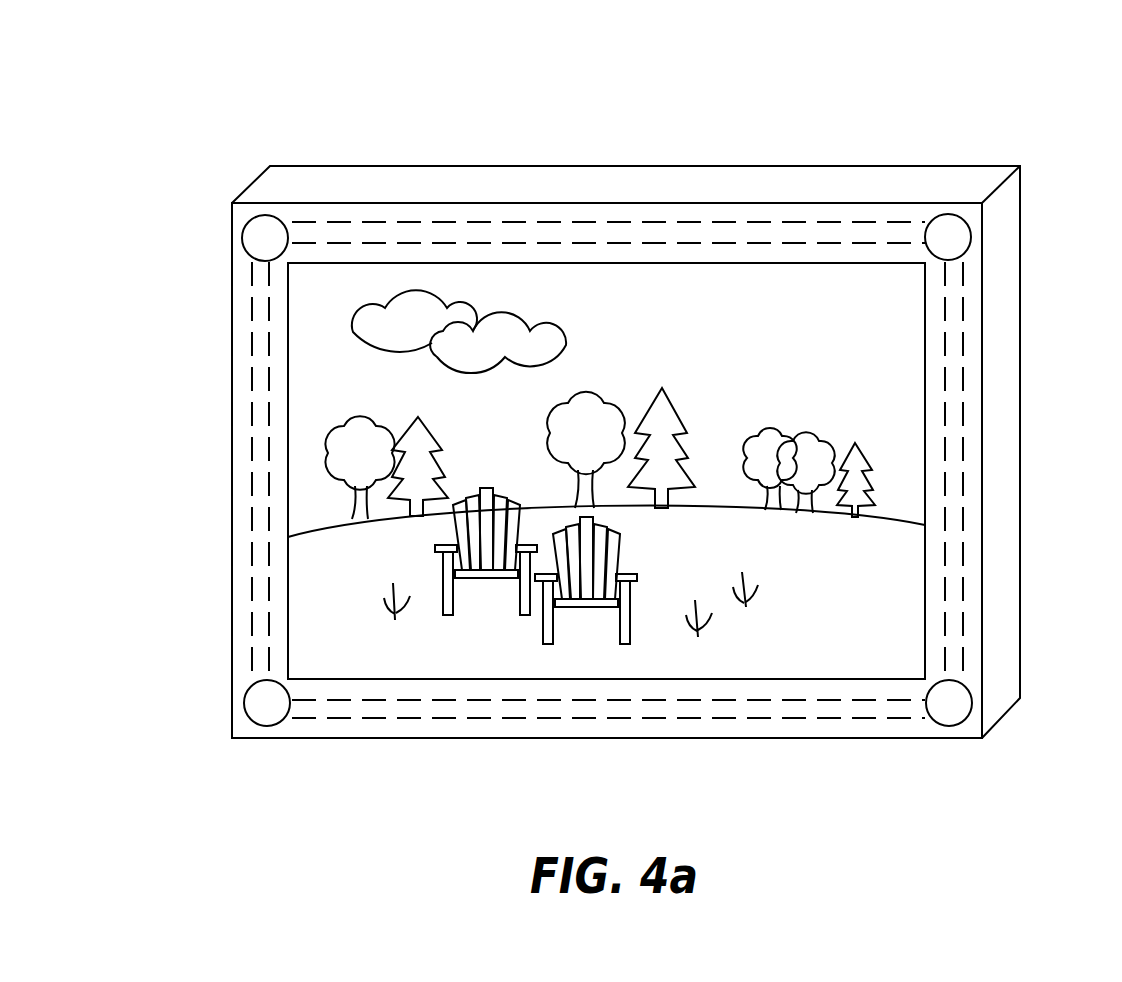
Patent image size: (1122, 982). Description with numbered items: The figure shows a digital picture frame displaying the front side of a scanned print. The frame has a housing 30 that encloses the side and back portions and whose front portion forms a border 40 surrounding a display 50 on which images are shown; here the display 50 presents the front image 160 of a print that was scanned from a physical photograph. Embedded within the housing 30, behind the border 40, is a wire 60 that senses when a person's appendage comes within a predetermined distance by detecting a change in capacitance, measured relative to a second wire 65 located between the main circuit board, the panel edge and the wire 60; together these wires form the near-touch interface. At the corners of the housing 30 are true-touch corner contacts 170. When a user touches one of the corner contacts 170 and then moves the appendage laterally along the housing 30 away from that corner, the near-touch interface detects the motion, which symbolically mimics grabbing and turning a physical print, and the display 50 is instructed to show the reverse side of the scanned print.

The housing 30 is at (755, 132).
The border 40 is at (236, 537).
The display 50 is at (918, 330).
The wire 60 is at (268, 400).
The second wire 65 is at (250, 459).
The front image 160 is at (718, 559).
The true-touch corner contacts 170 is at (254, 235).